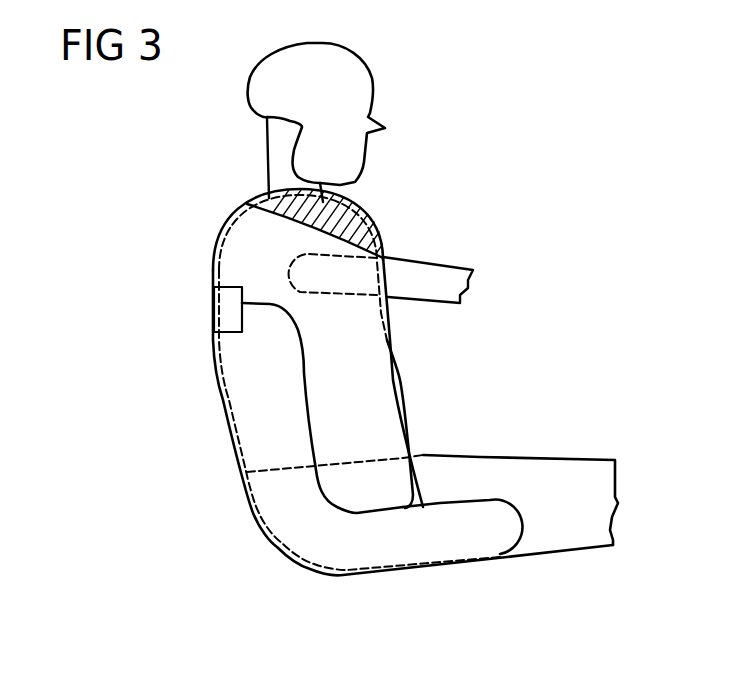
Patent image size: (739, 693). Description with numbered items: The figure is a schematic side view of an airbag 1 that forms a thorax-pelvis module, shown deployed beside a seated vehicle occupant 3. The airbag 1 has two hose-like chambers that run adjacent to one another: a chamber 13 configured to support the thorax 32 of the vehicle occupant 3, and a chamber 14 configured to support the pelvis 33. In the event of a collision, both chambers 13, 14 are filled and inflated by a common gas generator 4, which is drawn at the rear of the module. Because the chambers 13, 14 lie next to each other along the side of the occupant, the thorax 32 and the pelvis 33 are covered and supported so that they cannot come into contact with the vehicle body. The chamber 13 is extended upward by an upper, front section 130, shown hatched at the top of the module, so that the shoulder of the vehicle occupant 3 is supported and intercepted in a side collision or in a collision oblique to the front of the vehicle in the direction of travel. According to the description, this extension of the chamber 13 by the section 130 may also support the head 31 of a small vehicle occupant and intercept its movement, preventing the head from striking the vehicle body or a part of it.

The airbag 1 is at (383, 418).
The vehicle occupant 3 is at (588, 478).
The gas generator 4 is at (230, 305).
The chamber 13 is at (350, 435).
The chamber 14 is at (480, 530).
The head of occupant 31 is at (347, 88).
The thorax 32 is at (388, 312).
The pelvis 33 is at (328, 550).
The upper, front section 130 is at (363, 212).